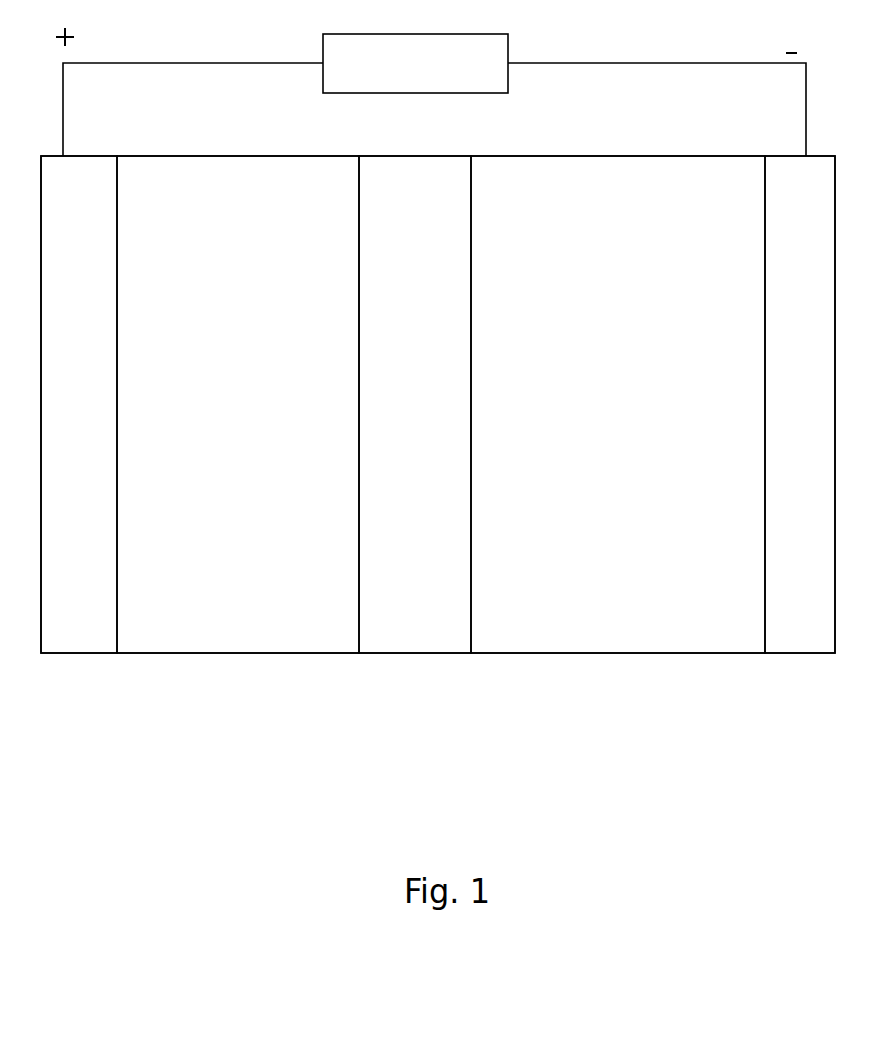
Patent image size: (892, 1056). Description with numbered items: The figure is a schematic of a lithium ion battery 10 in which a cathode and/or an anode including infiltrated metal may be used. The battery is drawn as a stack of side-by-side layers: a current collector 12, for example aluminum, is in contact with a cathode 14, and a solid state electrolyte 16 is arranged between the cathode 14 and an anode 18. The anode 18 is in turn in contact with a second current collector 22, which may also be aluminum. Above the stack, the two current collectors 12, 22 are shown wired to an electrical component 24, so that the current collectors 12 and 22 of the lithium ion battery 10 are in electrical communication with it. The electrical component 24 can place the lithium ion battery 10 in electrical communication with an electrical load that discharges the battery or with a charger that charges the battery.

The lithium ion battery 10 is at (186, 690).
The current collector 12 is at (81, 621).
The cathode 14 is at (243, 625).
The solid state electrolyte 16 is at (428, 621).
The anode 18 is at (613, 630).
The current collector 22 is at (804, 629).
The electrical component 24 is at (480, 69).